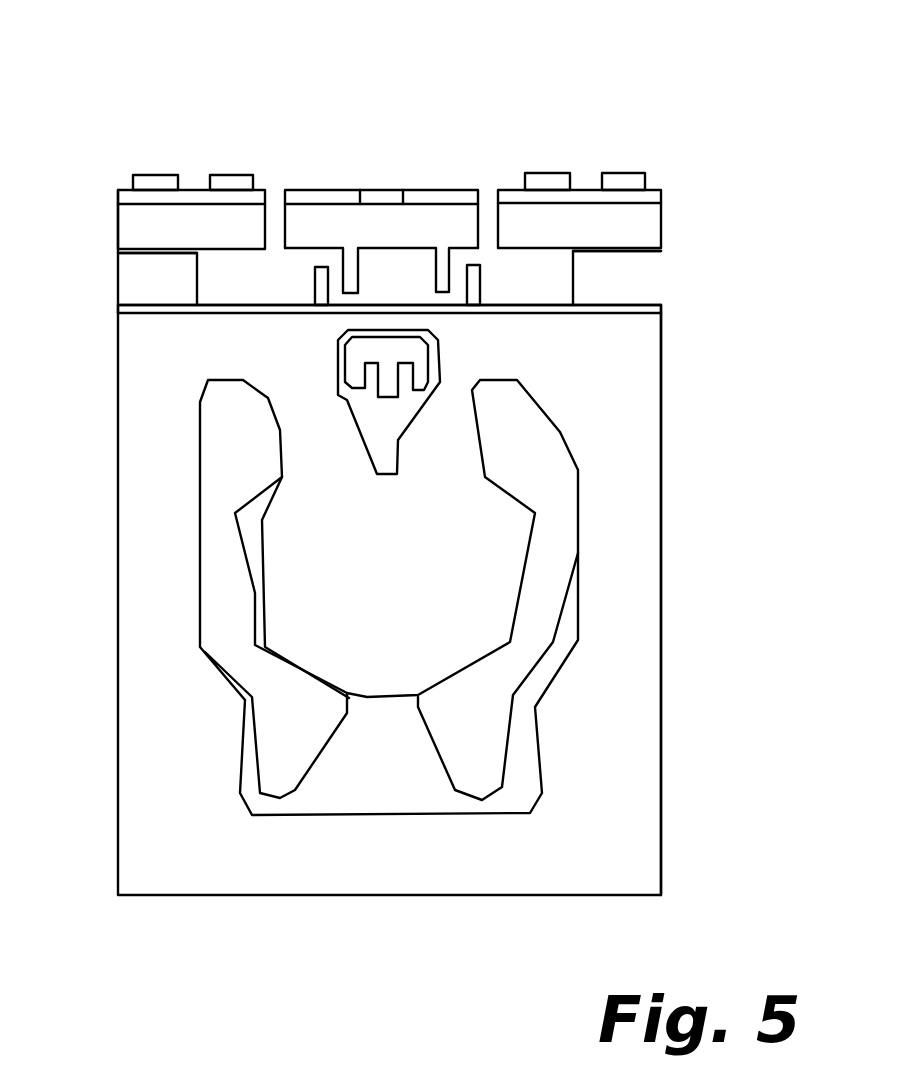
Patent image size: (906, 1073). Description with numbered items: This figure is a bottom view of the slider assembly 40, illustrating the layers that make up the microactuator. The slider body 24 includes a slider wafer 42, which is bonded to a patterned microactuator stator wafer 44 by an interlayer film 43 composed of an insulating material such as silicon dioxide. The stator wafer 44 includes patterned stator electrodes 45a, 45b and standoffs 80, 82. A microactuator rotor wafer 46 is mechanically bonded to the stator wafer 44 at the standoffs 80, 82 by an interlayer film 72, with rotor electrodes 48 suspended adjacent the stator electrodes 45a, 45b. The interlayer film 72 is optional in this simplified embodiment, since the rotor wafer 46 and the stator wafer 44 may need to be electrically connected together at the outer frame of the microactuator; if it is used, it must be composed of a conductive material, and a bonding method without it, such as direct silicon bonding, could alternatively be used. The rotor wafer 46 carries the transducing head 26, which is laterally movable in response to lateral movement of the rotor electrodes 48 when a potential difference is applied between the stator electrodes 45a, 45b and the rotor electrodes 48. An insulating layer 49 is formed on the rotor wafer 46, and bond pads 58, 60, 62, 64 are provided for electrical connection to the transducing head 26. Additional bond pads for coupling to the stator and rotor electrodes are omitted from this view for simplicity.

The slider body 24 is at (662, 811).
The transducing head 26 is at (377, 188).
The slider assembly 40 is at (253, 942).
The slider wafer 42 is at (660, 526).
The interlayer film 43 is at (118, 308).
The microactuator stator wafer 44 is at (662, 282).
The stator electrode 45a is at (313, 287).
The stator electrode 45b is at (482, 285).
The microactuator rotor wafer 46 is at (662, 218).
The rotor electrodes 48 is at (436, 270).
The insulating layer 49 is at (661, 195).
The bond pad 58 is at (625, 172).
The bond pad 60 is at (542, 172).
The bond pad 62 is at (145, 173).
The bond pad 64 is at (223, 173).
The interlayer film 72 is at (118, 252).
The standoff 80 is at (658, 293).
The standoff 82 is at (130, 278).